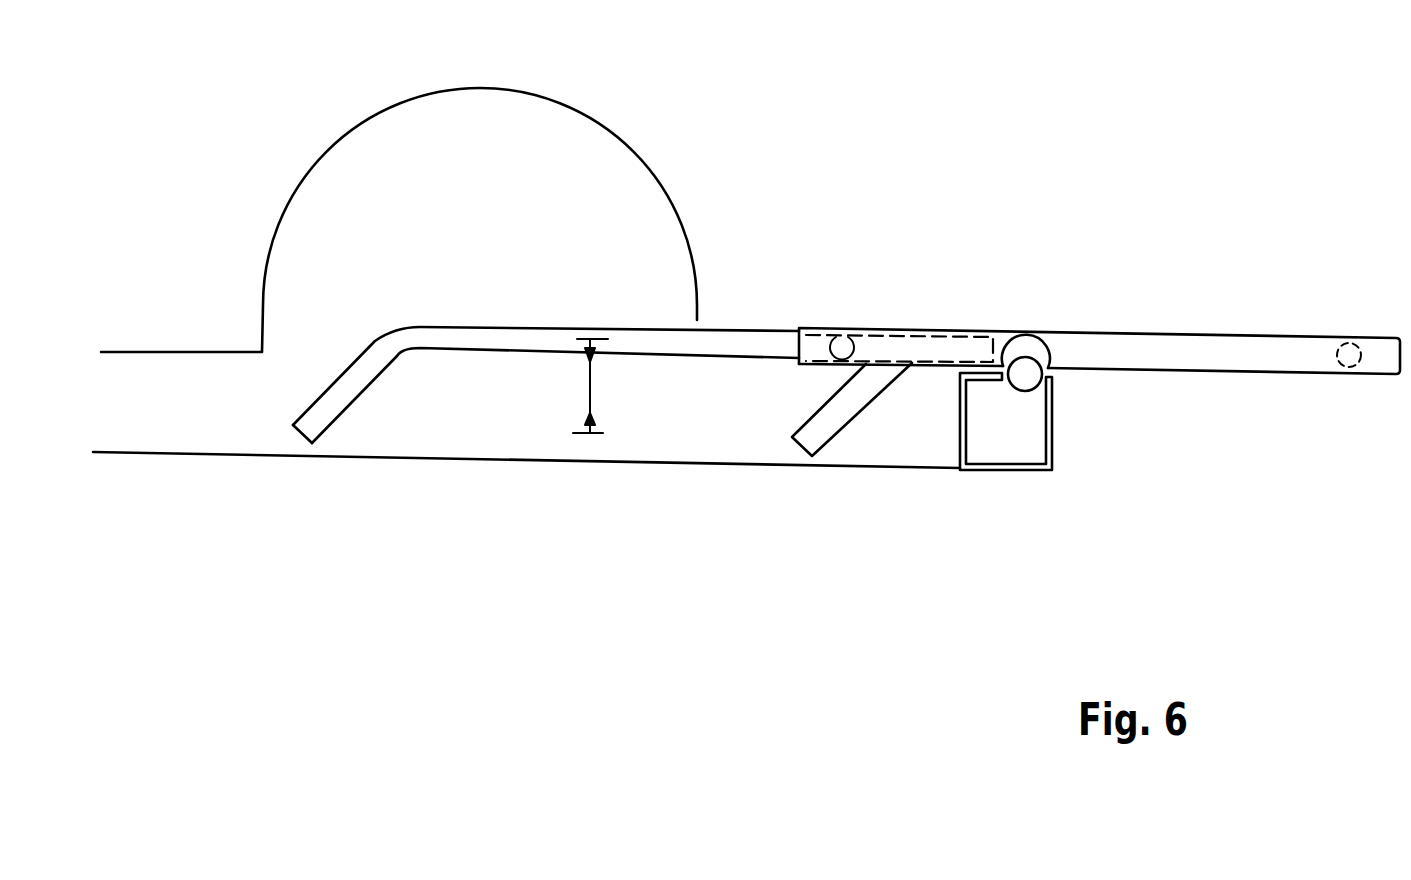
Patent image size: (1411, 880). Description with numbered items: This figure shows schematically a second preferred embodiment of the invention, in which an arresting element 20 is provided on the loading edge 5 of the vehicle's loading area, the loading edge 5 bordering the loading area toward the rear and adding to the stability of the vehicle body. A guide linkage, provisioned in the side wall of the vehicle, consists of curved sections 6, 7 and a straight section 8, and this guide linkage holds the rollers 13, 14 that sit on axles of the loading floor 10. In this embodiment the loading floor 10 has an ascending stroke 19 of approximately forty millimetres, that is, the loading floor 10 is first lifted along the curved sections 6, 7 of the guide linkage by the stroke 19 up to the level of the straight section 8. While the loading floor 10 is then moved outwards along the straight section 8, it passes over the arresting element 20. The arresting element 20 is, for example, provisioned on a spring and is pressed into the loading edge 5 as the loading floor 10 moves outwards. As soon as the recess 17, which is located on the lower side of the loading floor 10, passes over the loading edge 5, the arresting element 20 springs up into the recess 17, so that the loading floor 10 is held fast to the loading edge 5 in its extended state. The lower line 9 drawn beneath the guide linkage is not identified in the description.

The loading edge 5 is at (1052, 447).
The curved section 6 is at (353, 407).
The curved section 7 is at (850, 422).
The straight section 8 is at (515, 325).
The base line / floor 9 is at (728, 465).
The loading floor 10 is at (1209, 347).
The roller 13 is at (842, 333).
The roller 14 is at (1350, 345).
The recess 17 is at (1023, 351).
The ascending stroke 19 is at (588, 387).
The arresting element 20 is at (1027, 378).